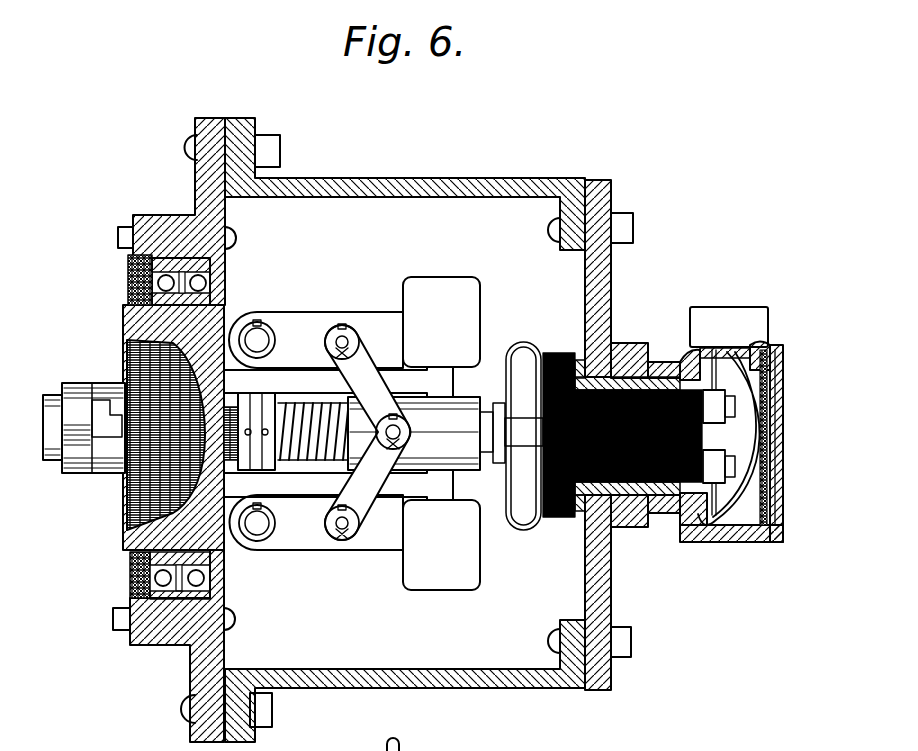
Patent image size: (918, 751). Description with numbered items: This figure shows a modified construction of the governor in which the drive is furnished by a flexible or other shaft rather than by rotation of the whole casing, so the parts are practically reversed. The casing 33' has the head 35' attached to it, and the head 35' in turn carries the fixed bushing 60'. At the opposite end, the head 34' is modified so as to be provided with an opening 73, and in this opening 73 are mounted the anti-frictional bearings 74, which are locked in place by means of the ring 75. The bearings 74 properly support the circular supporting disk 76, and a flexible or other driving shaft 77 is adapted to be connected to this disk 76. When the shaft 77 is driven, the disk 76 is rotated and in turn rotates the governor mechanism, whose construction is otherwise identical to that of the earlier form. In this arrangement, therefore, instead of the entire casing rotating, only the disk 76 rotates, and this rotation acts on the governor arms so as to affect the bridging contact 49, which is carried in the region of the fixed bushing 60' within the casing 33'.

The casing 33' is at (429, 430).
The head 34' is at (206, 430).
The head 35' is at (630, 435).
The bridging contact 49 is at (502, 462).
The fixed bushing 60' is at (644, 419).
The opening 73 is at (222, 583).
The anti-frictional bearings 74 is at (222, 595).
The ring 75 is at (147, 580).
The circular supporting disk 76 is at (224, 307).
The driving shaft 77 is at (48, 397).